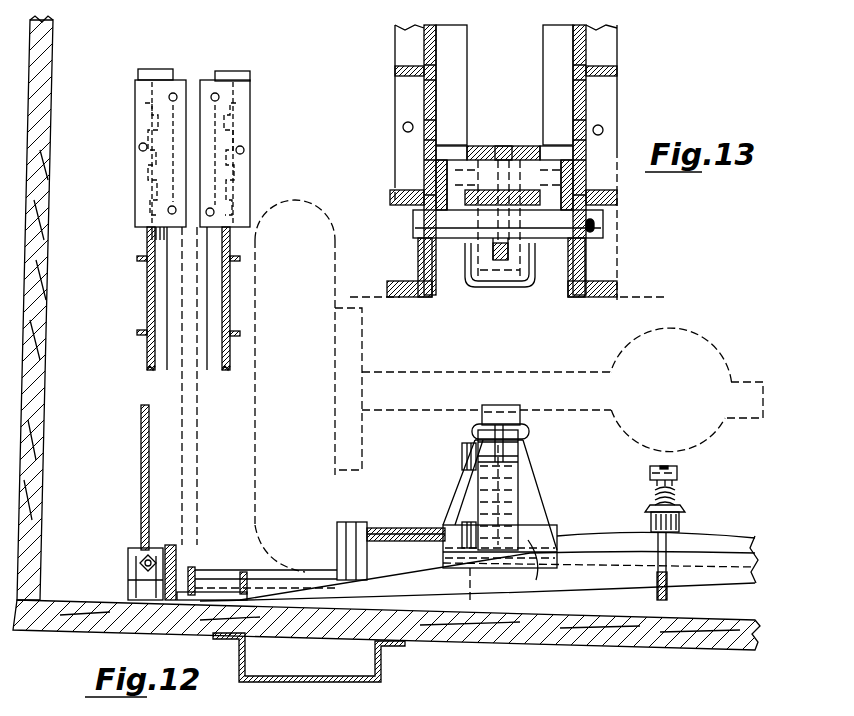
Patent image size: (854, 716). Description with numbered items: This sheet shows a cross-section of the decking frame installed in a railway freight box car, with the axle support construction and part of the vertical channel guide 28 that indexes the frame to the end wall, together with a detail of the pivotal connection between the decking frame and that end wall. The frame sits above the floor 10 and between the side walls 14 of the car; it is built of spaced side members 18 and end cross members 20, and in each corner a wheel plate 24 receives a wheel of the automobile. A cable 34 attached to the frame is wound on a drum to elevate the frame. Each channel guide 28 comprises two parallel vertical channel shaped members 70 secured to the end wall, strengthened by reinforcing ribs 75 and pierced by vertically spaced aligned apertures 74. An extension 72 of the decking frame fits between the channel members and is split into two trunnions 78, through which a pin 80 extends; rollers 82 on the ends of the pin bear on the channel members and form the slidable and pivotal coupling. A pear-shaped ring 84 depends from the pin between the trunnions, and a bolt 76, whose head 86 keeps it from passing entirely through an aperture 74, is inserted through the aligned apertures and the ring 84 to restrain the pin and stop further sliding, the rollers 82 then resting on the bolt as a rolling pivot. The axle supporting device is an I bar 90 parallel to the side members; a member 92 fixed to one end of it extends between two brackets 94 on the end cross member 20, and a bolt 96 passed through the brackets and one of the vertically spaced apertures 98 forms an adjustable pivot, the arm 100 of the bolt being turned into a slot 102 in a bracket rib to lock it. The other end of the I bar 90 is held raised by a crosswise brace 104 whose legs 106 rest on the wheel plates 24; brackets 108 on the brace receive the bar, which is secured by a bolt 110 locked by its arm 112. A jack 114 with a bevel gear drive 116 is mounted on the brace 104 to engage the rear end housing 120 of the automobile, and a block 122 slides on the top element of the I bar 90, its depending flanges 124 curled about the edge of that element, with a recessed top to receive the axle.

In FIG. 12, the floor 10 is at (78, 600).
In FIG. 12, the side wall 14 is at (48, 420).
In FIG. 12, the side member 18 is at (170, 547).
In FIG. 12, the end cross member 20 is at (716, 548).
In FIG. 12, the wheel plate 24 is at (226, 572).
In FIG. 12, the vertical channel guide 28 is at (206, 50).
In FIG. 12, the cable 34 is at (140, 470).
In FIG. 12, the channel shaped member 70 is at (147, 229).
In FIG. 13, the channel shaped member 70 is at (437, 62).
In FIG. 12, the extension 72 is at (180, 563).
In FIG. 13, the extension 72 is at (504, 290).
In FIG. 12, the aperture 74 is at (222, 345).
In FIG. 13, the aperture 74 is at (437, 90).
In FIG. 12, the reinforcing rib 75 is at (140, 333).
In FIG. 13, the reinforcing rib 75 is at (395, 69).
In FIG. 13, the bolt 76 is at (592, 259).
In FIG. 13, the trunnion 78 is at (525, 146).
In FIG. 13, the pin 80 is at (470, 160).
In FIG. 13, the roller 82 is at (445, 182).
In FIG. 13, the ring 84 is at (494, 259).
In FIG. 13, the head 86 is at (413, 224).
In FIG. 12, the I bar 90 is at (498, 425).
In FIG. 12, the member 92 is at (506, 495).
In FIG. 12, the bracket 94 is at (546, 516).
In FIG. 12, the bolt 96 is at (532, 582).
In FIG. 12, the aperture 98 is at (468, 503).
In FIG. 12, the arm 100 is at (472, 580).
In FIG. 12, the slot 102 is at (462, 532).
In FIG. 12, the brace 104 is at (392, 528).
In FIG. 12, the leg 106 is at (340, 548).
In FIG. 12, the bracket 108 is at (468, 484).
In FIG. 12, the bolt 110 is at (526, 446).
In FIG. 12, the arm 112 is at (462, 457).
In FIG. 12, the jack 114 is at (677, 479).
In FIG. 12, the bevel gear drive 116 is at (685, 506).
In FIG. 12, the rear end housing 120 is at (716, 348).
In FIG. 12, the block 122 is at (482, 410).
In FIG. 12, the depending flange 124 is at (529, 432).